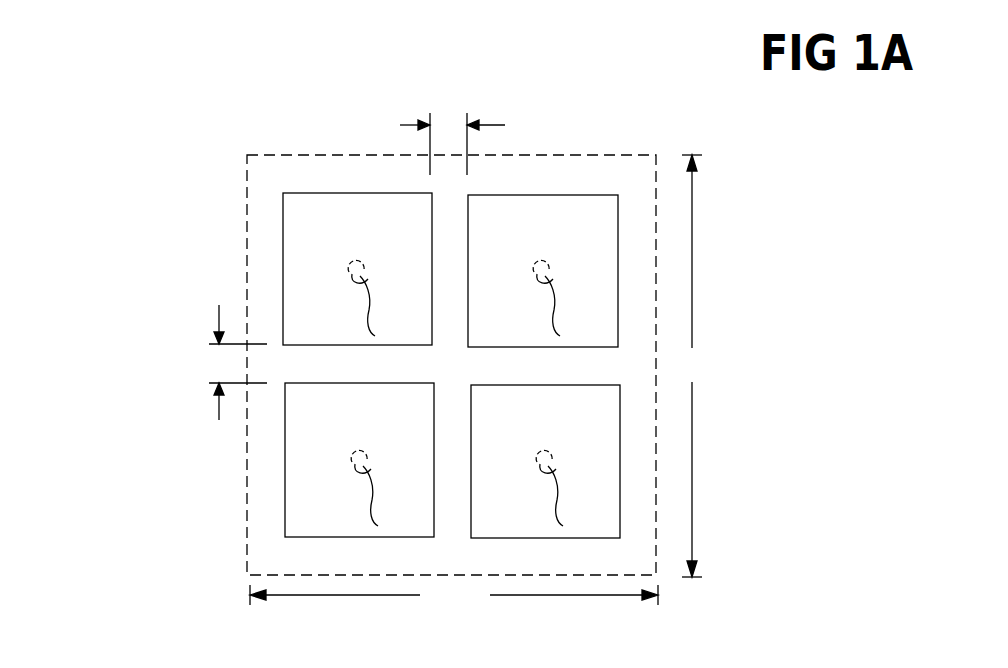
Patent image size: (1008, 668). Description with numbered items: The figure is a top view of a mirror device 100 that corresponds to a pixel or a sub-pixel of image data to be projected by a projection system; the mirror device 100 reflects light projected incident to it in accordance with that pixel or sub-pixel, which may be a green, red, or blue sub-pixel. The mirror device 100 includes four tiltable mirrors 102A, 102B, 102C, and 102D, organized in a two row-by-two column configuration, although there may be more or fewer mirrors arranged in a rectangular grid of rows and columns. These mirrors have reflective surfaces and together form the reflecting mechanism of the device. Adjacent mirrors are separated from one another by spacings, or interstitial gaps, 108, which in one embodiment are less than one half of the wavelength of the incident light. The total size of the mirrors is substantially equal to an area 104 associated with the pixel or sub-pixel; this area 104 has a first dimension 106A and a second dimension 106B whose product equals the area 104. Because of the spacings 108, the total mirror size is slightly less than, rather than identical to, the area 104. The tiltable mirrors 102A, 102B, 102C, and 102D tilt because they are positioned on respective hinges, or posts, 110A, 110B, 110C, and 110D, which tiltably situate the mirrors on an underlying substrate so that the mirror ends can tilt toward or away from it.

The mirror device 100 is at (90, 150).
The tiltable mirror 102A is at (422, 230).
The tiltable mirror 102B is at (608, 230).
The tiltable mirror 102C is at (425, 420).
The tiltable mirror 102D is at (612, 420).
The area 104 is at (270, 172).
The first dimension 106A is at (454, 594).
The second dimension 106B is at (695, 366).
The spacing 108 is at (445, 128).
The hinge 110A is at (391, 298).
The hinge 110B is at (575, 298).
The hinge 110C is at (394, 488).
The hinge 110D is at (579, 488).